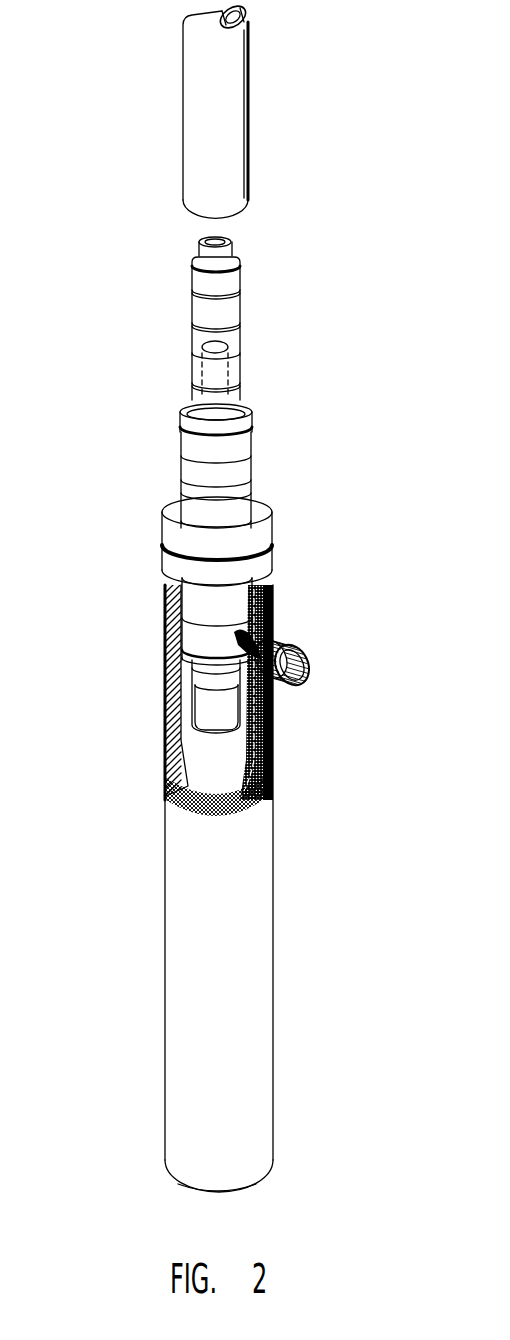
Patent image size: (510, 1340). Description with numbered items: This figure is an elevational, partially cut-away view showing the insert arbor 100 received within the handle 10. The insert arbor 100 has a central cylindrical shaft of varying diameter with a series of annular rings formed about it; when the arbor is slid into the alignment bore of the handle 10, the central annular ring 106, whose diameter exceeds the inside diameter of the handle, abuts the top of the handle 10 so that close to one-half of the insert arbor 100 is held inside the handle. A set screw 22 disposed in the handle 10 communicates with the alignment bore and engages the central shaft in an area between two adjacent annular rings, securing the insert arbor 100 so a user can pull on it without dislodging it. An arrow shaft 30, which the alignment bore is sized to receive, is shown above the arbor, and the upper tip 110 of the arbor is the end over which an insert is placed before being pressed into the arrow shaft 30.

The handle 10 is at (256, 867).
The set screw 22 is at (283, 640).
The arrow shaft 30 is at (225, 156).
The insert arbor 100 is at (140, 433).
The central annular ring 106 is at (260, 551).
The nozzle tip 110 is at (230, 305).